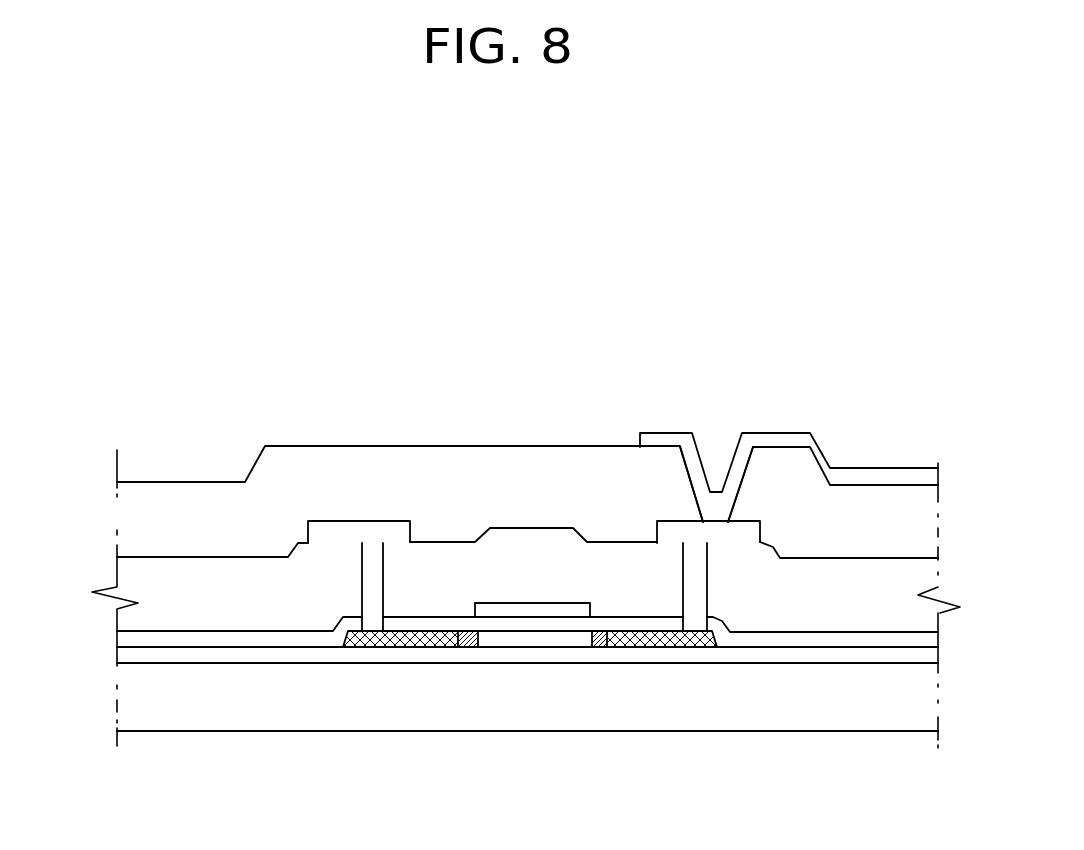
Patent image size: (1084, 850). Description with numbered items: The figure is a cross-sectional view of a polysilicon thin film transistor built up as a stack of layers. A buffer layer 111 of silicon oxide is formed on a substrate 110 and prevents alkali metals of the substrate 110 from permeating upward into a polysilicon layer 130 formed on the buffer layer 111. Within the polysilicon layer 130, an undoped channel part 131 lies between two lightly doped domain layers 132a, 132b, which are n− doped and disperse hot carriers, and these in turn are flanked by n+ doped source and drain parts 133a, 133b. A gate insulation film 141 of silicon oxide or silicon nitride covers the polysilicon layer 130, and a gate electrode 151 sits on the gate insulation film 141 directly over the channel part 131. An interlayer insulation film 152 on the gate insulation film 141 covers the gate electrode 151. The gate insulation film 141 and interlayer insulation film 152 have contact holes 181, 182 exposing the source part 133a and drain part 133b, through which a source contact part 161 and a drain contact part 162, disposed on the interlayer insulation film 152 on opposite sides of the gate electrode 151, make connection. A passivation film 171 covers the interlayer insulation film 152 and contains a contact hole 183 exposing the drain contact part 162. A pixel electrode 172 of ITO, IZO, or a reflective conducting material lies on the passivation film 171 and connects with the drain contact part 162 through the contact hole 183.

The substrate 110 is at (118, 704).
The buffer layer 111 is at (118, 656).
The polysilicon layer 130 is at (530, 731).
The channel part 131 is at (537, 636).
The lightly doped domain (LDD) layer 132a is at (473, 647).
The lightly doped domain (LDD) layer 132b is at (603, 647).
The source part 133a is at (412, 647).
The drain part 133b is at (662, 711).
The gate insulation film 141 is at (118, 637).
The gate electrode 151 is at (512, 605).
The interlayer insulation film 152 is at (118, 576).
The source contact part 161 is at (340, 525).
The drain contact part 162 is at (672, 527).
The passivation film 171 is at (118, 513).
The pixel electrode 172 is at (882, 468).
The contact hole 181 is at (363, 632).
The contact hole 182 is at (772, 780).
The contact hole 183 is at (722, 449).